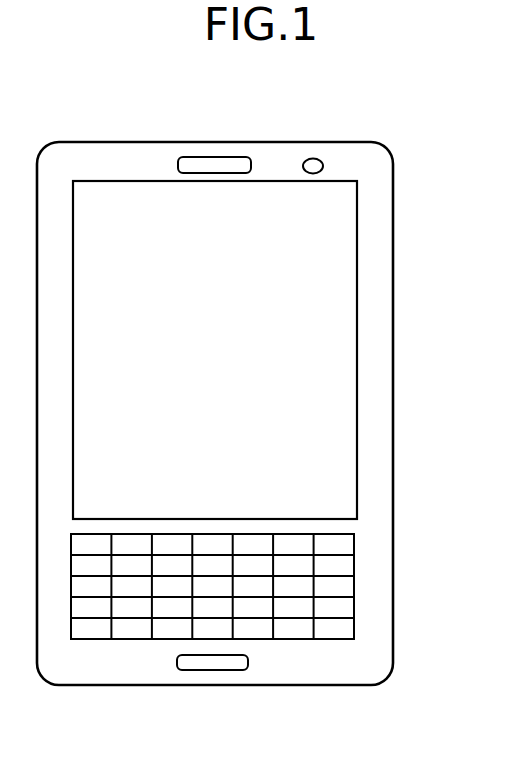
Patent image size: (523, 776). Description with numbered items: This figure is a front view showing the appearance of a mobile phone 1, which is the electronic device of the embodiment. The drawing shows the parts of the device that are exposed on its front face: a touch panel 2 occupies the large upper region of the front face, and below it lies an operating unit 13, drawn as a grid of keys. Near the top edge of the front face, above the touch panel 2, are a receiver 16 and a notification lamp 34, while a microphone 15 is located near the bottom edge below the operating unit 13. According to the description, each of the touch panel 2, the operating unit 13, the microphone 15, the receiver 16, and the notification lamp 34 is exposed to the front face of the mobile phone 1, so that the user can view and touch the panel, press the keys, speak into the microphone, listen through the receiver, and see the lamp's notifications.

The mobile phone 1 is at (393, 237).
The touch panel 2 is at (357, 342).
The operating unit 13 is at (397, 533).
The microphone 15 is at (215, 670).
The receiver 16 is at (212, 157).
The notification lamp 34 is at (313, 158).